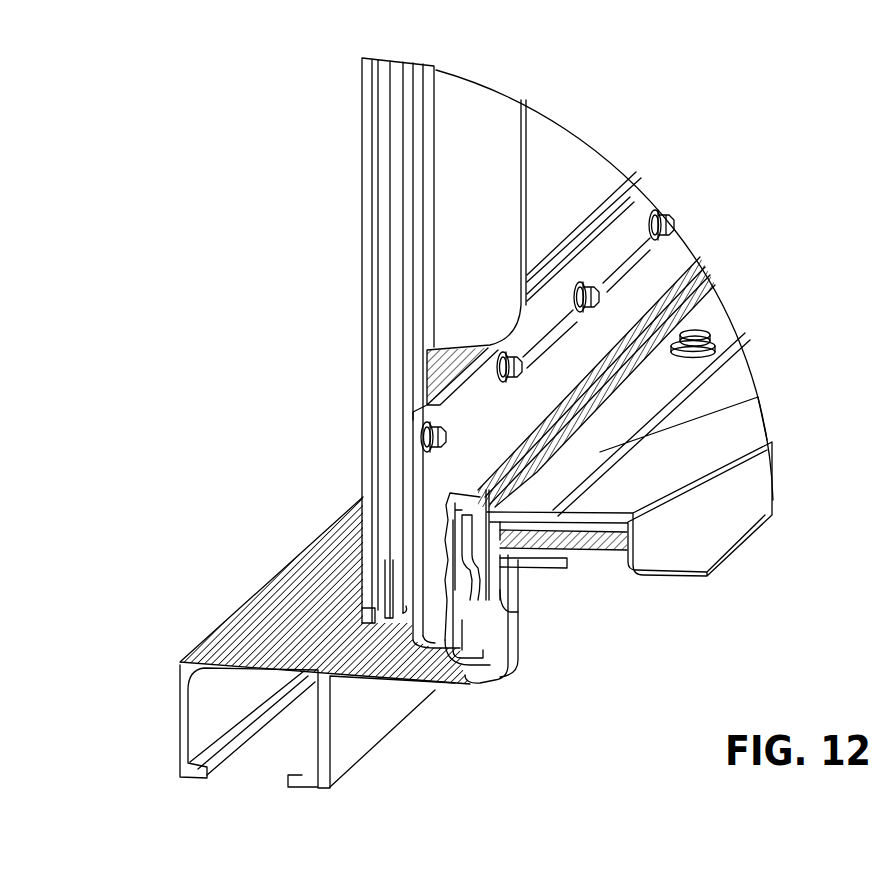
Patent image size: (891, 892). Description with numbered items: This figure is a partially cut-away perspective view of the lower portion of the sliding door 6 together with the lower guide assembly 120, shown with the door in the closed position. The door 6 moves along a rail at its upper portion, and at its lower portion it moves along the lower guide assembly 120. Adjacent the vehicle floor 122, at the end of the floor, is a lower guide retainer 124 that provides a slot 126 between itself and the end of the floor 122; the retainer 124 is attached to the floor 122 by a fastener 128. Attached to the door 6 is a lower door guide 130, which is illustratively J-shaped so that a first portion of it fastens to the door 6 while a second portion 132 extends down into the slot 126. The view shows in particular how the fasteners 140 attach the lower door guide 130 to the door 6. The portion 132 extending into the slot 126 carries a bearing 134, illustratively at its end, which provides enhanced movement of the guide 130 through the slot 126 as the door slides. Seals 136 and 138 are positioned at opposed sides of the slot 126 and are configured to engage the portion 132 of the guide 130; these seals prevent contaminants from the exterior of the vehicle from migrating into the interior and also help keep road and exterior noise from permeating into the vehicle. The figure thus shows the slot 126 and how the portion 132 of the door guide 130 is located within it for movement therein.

The door 6 is at (355, 154).
The lower guide assembly 120 is at (196, 342).
The floor 122 is at (695, 418).
The lower guide retainer 124 is at (671, 285).
The slot 126 is at (470, 505).
The fastener 128 is at (701, 334).
The lower door guide 130 is at (621, 233).
The portion 132 is at (490, 580).
The bearing 134 is at (486, 512).
The seal 136 is at (472, 615).
The seal 138 is at (493, 606).
The fasteners 140 is at (661, 212).